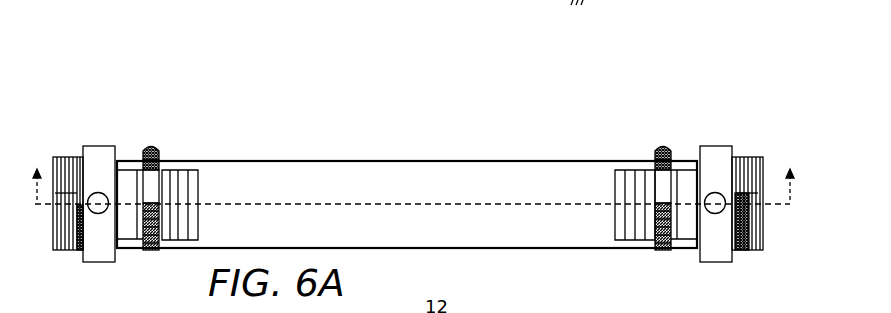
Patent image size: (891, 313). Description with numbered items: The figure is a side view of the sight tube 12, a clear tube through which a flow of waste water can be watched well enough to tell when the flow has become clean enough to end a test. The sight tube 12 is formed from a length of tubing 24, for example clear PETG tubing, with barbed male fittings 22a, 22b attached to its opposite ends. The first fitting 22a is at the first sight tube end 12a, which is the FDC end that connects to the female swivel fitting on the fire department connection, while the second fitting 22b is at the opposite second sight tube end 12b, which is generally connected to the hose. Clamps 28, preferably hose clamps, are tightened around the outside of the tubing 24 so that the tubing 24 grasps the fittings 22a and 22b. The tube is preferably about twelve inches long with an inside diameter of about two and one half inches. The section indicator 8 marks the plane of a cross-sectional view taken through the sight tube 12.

The section line 8- 8 is at (414, 177).
The sight tube 12 is at (347, 122).
The first sight tube end 12a is at (777, 140).
The second sight tube end 12b is at (48, 132).
The first fitting 22a is at (713, 158).
The second fitting 22b is at (101, 160).
The tubing 24 is at (475, 177).
The clamps 28 is at (149, 147).